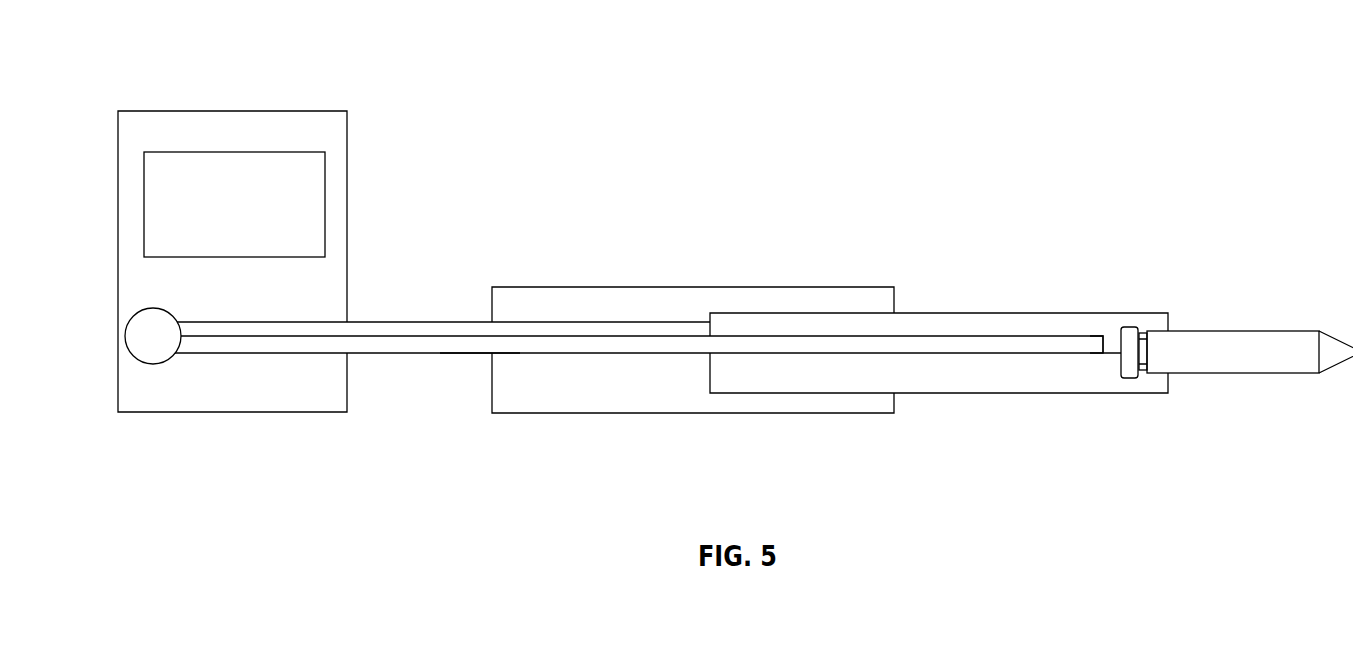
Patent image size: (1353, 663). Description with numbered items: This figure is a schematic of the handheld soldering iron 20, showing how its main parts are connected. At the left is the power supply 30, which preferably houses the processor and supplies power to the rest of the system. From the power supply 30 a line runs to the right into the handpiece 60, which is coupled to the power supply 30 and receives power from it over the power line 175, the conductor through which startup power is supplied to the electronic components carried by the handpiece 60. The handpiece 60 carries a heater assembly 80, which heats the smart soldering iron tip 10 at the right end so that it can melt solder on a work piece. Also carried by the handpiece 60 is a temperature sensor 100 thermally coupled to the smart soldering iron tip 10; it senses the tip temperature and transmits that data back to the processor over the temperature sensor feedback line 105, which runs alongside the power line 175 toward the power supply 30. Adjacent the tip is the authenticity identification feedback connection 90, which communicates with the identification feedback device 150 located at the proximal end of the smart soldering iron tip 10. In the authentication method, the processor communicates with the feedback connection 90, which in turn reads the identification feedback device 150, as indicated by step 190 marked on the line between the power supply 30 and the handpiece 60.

The smart soldering iron tip 10 is at (1257, 321).
The handheld soldering iron 20 is at (1128, 52).
The power supply 30 is at (129, 95).
The handpiece 60 is at (542, 266).
The heater assembly 80 is at (941, 298).
The authenticity identification feedback connection 90 is at (1130, 388).
The temperature sensor 100 is at (1109, 341).
The temperature sensor feedback line 105 is at (401, 340).
The identification feedback device 150 is at (1154, 323).
The power line 175 is at (404, 318).
The step of processor communicating with ID feedback connection 190 is at (469, 357).